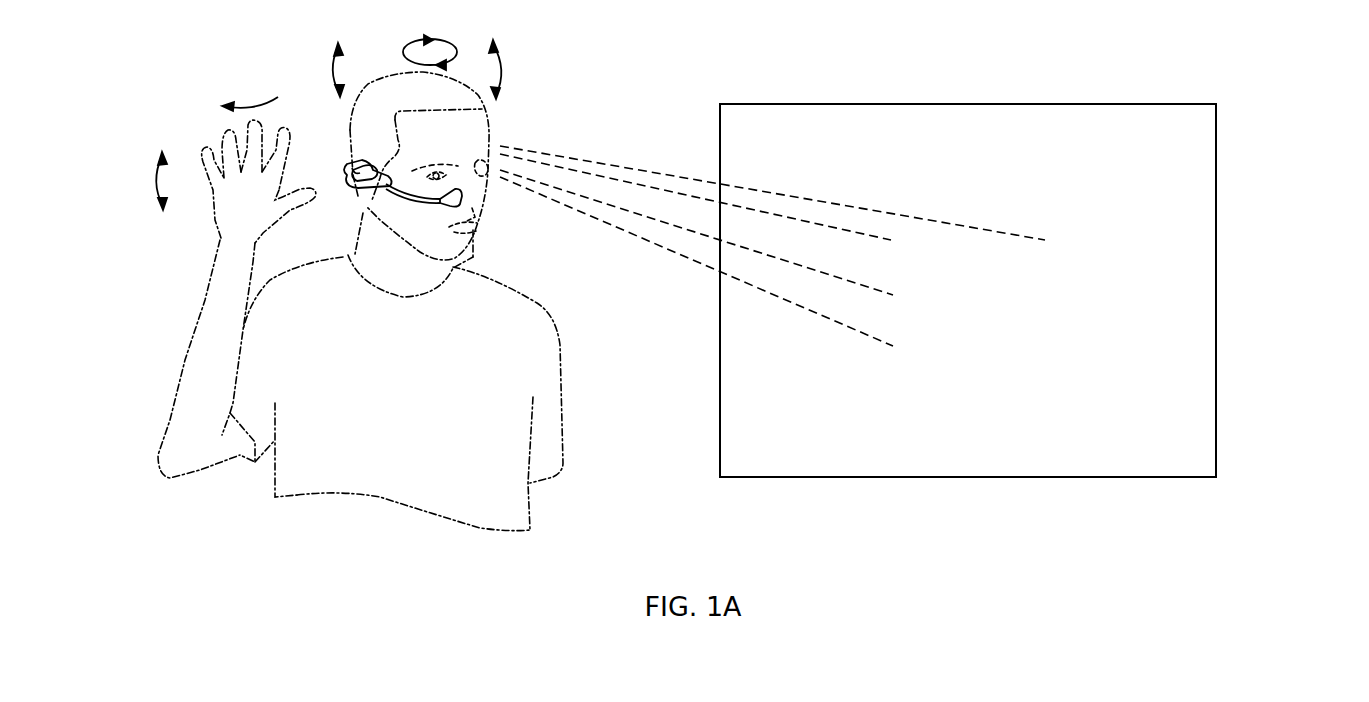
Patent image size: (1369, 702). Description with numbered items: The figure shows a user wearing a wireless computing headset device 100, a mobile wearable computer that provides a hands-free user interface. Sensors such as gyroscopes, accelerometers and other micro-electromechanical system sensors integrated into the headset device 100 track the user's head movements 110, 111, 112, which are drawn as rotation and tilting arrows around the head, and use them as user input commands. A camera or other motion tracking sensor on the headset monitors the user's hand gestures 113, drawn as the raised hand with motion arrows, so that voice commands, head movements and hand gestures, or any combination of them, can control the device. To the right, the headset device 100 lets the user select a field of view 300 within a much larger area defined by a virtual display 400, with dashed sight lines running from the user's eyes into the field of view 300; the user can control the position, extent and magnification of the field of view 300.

The wireless computing headset device 100 is at (385, 205).
The head movement 110 is at (404, 56).
The head movement 111 is at (504, 72).
The head movement 112 is at (336, 70).
The hand gesture 113 is at (155, 182).
The field of view 300 is at (1043, 287).
The virtual display 400 is at (832, 478).